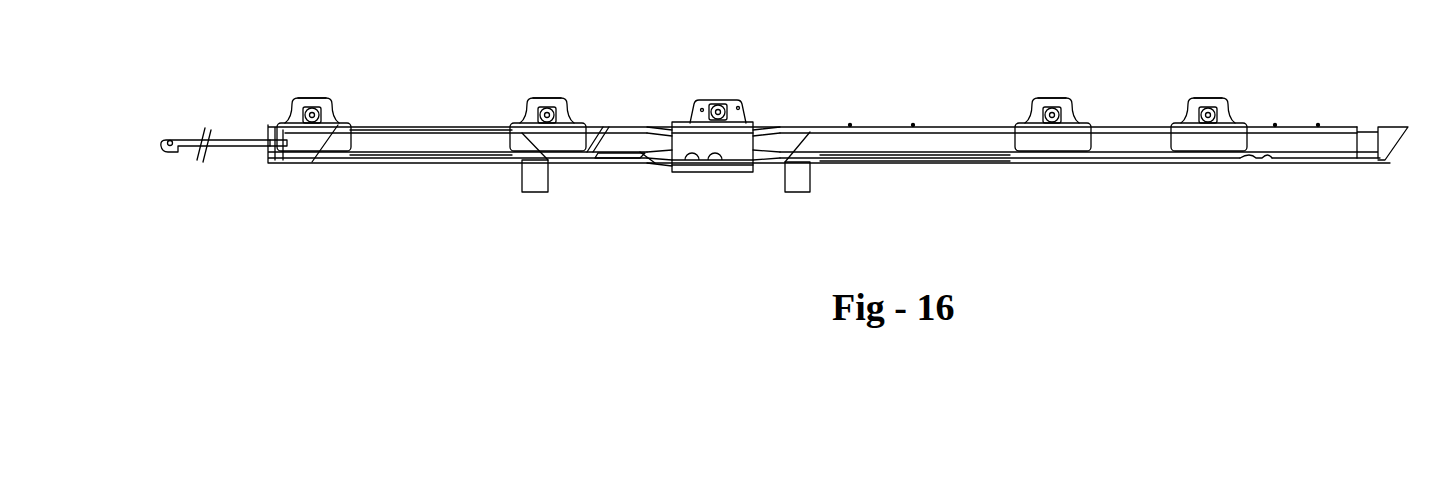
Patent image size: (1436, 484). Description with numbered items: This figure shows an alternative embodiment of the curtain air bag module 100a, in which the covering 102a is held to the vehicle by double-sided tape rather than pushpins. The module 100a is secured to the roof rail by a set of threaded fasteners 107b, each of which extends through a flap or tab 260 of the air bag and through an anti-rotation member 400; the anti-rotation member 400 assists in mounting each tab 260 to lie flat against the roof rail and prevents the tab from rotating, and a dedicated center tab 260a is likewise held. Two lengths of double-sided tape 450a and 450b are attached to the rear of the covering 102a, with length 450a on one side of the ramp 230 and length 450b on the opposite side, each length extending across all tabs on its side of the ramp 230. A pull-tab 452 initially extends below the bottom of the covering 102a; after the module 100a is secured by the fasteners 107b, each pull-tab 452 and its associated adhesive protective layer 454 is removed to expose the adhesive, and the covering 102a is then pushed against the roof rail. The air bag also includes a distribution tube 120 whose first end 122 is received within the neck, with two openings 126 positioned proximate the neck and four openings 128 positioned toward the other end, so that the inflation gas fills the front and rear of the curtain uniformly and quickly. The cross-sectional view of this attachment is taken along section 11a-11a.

The module 100a is at (410, 118).
The threaded fasteners 107b is at (308, 114).
The tabs 260 is at (327, 100).
The tab 260a is at (695, 100).
The anti-rotation member 400 is at (528, 106).
The pull-tab 452 is at (535, 178).
The adhesive protective layer 454 is at (477, 126).
The double-sided tape 450a is at (453, 167).
The double-sided tape 450b is at (977, 163).
The covering 102a is at (925, 163).
The distribution tube 120 is at (612, 168).
The openings 128 is at (647, 167).
The ramp 230 is at (733, 166).
The section 11a- 11a is at (716, 183).
The first end 122 is at (1403, 128).
The openings 126 is at (1270, 163).